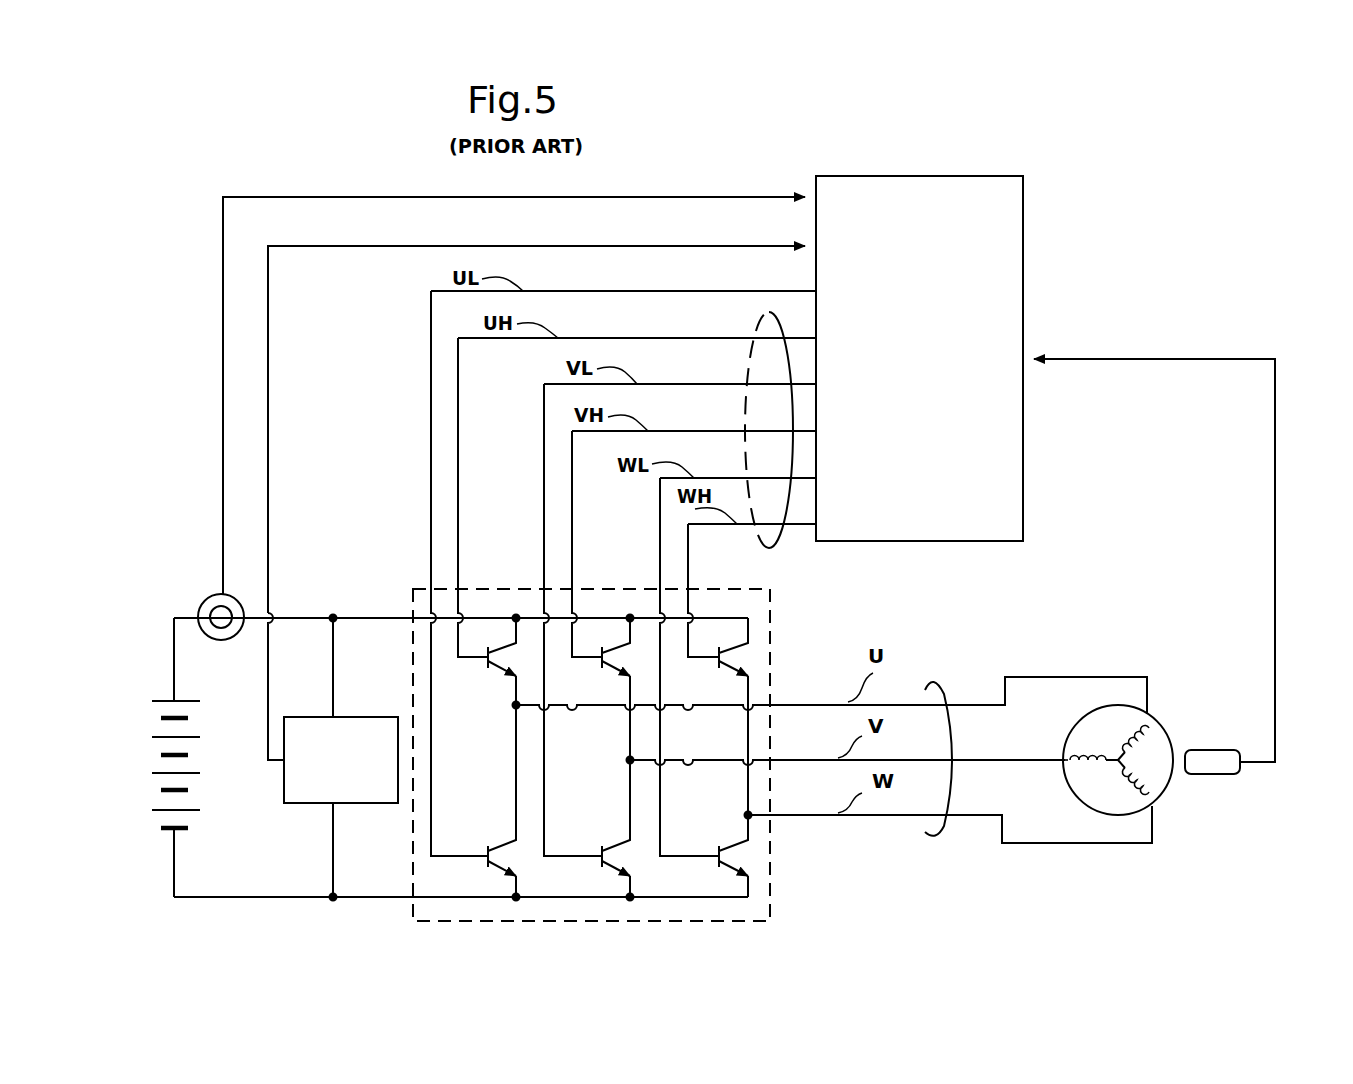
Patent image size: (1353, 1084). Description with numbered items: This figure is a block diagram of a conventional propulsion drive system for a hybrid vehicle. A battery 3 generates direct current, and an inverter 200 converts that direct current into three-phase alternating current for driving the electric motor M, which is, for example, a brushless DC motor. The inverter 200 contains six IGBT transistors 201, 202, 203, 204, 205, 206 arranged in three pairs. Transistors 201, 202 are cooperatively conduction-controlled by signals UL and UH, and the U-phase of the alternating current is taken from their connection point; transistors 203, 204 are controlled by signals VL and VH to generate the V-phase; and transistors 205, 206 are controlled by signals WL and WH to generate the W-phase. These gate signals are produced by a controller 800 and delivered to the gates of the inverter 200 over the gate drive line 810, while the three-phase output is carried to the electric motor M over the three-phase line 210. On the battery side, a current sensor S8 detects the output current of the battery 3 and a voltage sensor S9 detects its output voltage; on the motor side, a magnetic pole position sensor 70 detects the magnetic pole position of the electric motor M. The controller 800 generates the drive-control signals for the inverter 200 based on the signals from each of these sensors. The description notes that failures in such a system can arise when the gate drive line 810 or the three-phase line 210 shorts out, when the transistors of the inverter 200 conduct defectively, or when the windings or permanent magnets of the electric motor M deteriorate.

The battery 3 is at (158, 855).
The current sensor S8 is at (234, 641).
The voltage sensor S9 is at (283, 787).
The inverter 200 is at (468, 922).
The transistor 201 is at (492, 677).
The transistor 202 is at (493, 838).
The transistor 203 is at (607, 677).
The transistor 204 is at (606, 838).
The transistor 205 is at (744, 655).
The transistor 206 is at (742, 855).
The three-phase line 210 is at (938, 838).
The electric motor M is at (1177, 832).
The magnetic pole position sensor 70 is at (1208, 748).
The controller 800 is at (1023, 279).
The gate drive line 810 is at (772, 548).